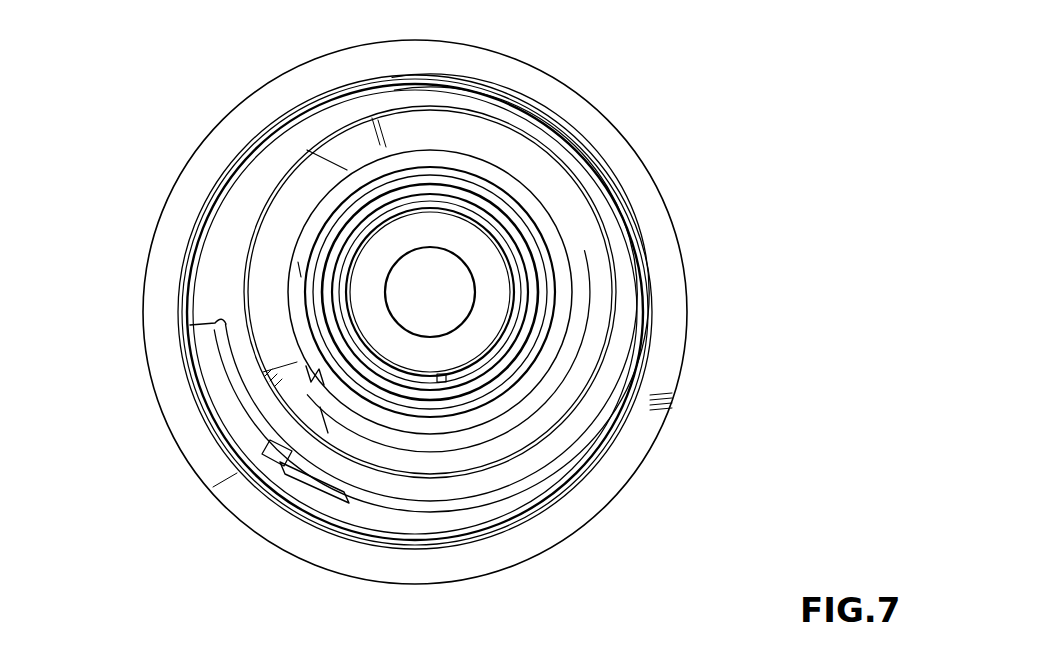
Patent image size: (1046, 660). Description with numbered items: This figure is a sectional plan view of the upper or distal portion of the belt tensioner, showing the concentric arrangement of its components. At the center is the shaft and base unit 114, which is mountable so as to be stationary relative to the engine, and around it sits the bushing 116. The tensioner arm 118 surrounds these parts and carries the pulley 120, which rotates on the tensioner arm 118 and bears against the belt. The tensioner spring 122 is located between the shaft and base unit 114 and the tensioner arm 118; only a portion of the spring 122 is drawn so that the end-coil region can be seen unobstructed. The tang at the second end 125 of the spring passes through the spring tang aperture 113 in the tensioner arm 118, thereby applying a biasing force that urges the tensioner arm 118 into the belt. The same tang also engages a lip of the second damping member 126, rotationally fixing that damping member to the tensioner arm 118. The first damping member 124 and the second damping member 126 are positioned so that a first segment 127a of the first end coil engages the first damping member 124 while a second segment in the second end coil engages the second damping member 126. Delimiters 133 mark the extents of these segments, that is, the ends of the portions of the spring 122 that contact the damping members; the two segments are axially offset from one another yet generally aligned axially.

The spring tang aperture 113 is at (327, 417).
The shaft and base unit 114 is at (510, 298).
The bushing 116 is at (467, 373).
The tensioner arm 118 is at (525, 327).
The pulley 120 is at (565, 527).
The tensioner spring 122 is at (580, 328).
The first damping member 124 is at (467, 397).
The second end 125 is at (282, 464).
The second damping member 126 is at (545, 252).
The first segment 127a is at (327, 200).
The delimiters 133 is at (372, 175).